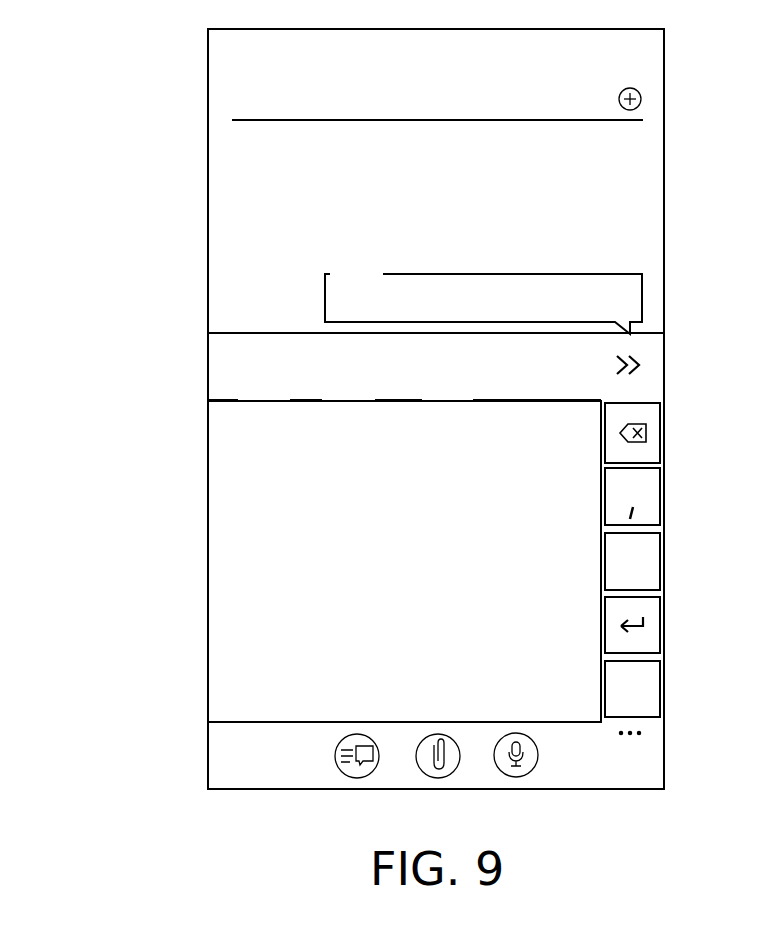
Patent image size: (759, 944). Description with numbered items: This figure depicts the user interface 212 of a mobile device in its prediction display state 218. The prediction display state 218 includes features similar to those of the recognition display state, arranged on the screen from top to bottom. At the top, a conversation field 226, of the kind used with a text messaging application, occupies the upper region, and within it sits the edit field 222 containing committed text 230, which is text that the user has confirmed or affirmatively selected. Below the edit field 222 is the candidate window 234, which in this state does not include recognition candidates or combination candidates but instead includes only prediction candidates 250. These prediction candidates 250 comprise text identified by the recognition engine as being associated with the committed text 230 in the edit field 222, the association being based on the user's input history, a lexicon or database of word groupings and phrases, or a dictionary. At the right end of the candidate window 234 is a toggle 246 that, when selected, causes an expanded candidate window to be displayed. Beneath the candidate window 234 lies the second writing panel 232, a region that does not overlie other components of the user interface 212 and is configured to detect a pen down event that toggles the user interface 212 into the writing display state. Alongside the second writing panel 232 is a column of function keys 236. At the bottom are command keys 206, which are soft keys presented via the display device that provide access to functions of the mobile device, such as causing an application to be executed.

The prediction display state 218 is at (88, 269).
The user interface 212 is at (665, 59).
The conversation field 226 is at (645, 188).
The edit field 222 is at (627, 301).
The committed text 230 is at (383, 287).
The candidate window 234 is at (228, 365).
The prediction candidates 250 is at (289, 385).
The toggle 246 is at (641, 358).
The second writing panel 232 is at (431, 589).
The function keys 236 is at (655, 433).
The command keys 206 is at (335, 752).